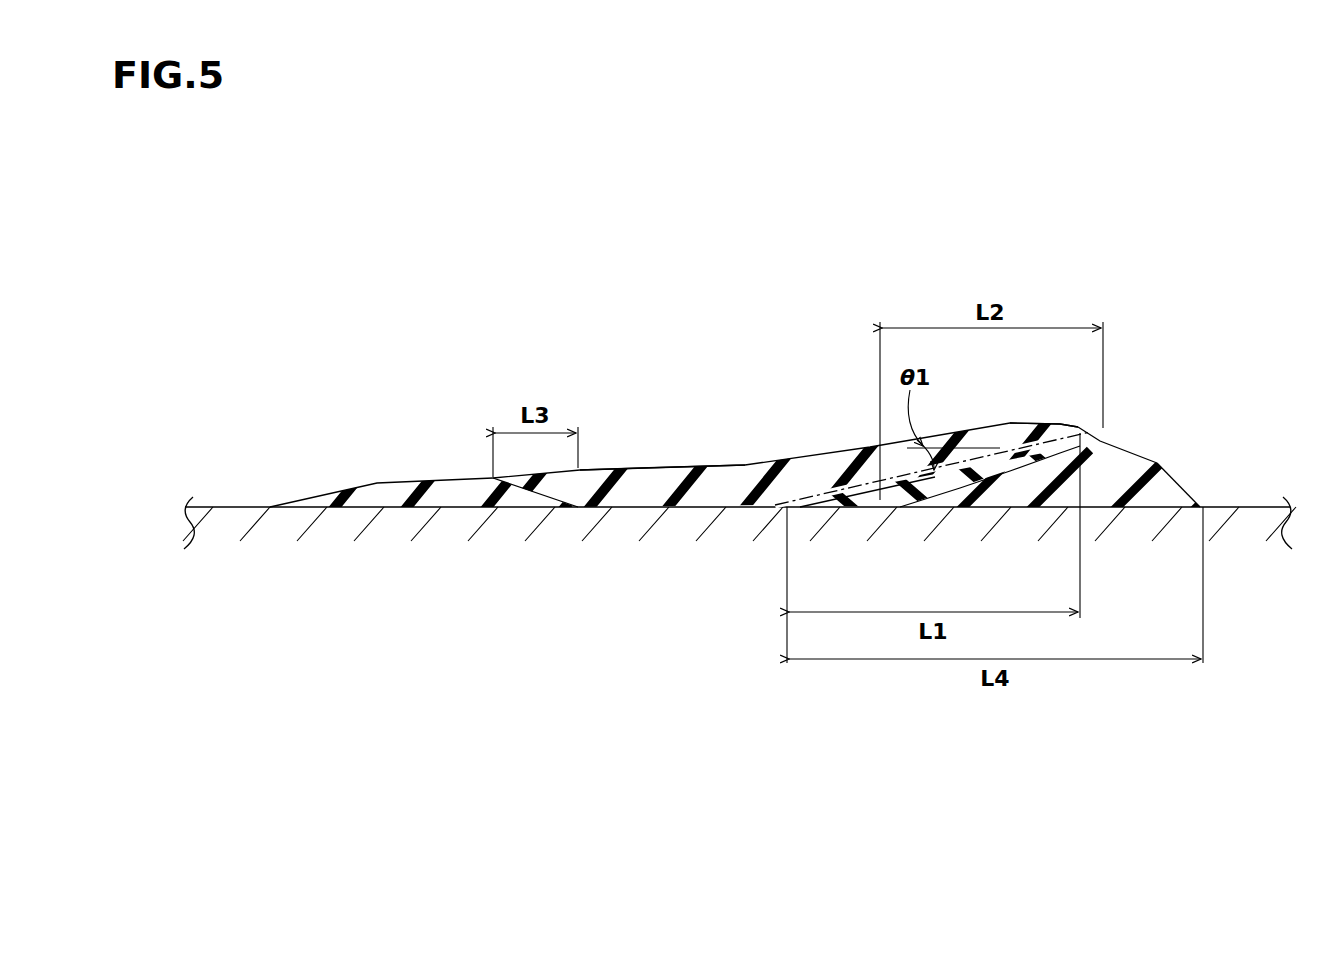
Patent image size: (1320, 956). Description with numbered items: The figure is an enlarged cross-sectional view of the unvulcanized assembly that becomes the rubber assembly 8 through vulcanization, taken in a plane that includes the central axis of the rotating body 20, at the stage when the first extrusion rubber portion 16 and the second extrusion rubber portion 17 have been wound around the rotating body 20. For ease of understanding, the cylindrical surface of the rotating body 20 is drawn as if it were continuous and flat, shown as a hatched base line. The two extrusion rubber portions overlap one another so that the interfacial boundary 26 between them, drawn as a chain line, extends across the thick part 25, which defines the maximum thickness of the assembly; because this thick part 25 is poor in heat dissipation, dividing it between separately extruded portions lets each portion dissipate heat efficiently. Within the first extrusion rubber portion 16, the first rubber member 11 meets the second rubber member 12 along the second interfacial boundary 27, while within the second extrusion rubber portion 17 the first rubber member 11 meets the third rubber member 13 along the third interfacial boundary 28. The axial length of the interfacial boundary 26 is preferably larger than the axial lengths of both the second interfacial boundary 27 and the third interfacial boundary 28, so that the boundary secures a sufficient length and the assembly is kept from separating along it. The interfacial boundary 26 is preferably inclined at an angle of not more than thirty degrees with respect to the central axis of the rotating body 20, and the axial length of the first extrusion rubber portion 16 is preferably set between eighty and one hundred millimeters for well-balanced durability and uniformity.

The rubber assembly 8 is at (467, 379).
The first rubber member 11 is at (717, 483).
The second rubber member 12 is at (1155, 493).
The third rubber member 13 is at (433, 495).
The first extrusion rubber portion 16 is at (1139, 438).
The second extrusion rubber portion 17 is at (648, 464).
The rotating body 20 is at (1250, 500).
The thick part 25 is at (1031, 417).
The interfacial boundary 26 is at (853, 482).
The second interfacial boundary 27 is at (1010, 475).
The third interfacial boundary 28 is at (530, 485).